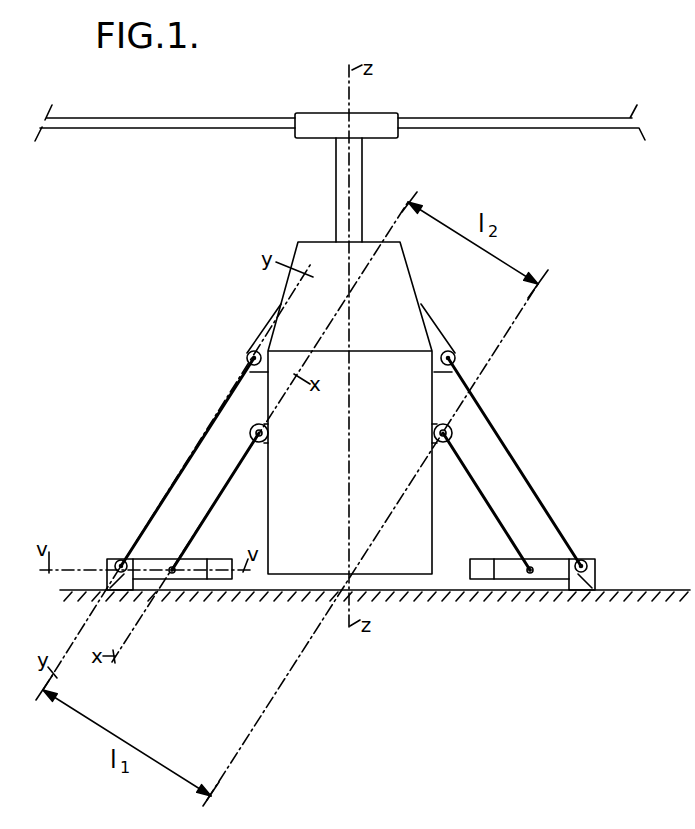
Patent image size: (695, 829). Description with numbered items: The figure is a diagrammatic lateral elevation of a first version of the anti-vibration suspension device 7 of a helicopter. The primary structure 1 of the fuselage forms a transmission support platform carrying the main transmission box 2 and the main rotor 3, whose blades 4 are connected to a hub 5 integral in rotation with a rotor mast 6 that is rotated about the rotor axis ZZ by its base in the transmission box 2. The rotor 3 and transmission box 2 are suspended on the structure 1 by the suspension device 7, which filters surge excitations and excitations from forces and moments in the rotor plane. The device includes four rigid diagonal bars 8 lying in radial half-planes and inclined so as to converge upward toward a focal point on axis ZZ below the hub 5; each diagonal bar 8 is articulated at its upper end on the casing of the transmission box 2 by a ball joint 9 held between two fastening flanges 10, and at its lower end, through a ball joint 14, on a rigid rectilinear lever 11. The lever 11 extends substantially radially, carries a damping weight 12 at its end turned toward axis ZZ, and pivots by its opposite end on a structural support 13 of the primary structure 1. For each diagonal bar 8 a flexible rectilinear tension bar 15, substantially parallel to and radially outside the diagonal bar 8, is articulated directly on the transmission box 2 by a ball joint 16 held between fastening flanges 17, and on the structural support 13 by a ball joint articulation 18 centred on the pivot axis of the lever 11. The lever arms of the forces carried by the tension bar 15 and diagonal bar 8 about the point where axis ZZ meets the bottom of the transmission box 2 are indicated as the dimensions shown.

The primary structure 1 is at (75, 595).
The main transmission box 2 is at (400, 397).
The main rotor 3 is at (340, 87).
The blades 4 is at (567, 125).
The hub 5 is at (315, 120).
The rotor mast 6 is at (355, 173).
The suspension device 7 is at (207, 371).
The diagonal bar 8 is at (225, 490).
The articulation ball joint 9 is at (253, 426).
The fastening flanges 10 is at (450, 428).
The rigid rectilinear lever 11 is at (160, 559).
The damping weight 12 is at (215, 563).
The structural support 13 is at (112, 572).
The ball joint 14 is at (172, 575).
The tension bar 15 is at (205, 435).
The articulation ball joint 16 is at (246, 353).
The fastening flanges 17 is at (250, 345).
The ball joint articulation 18 is at (118, 561).